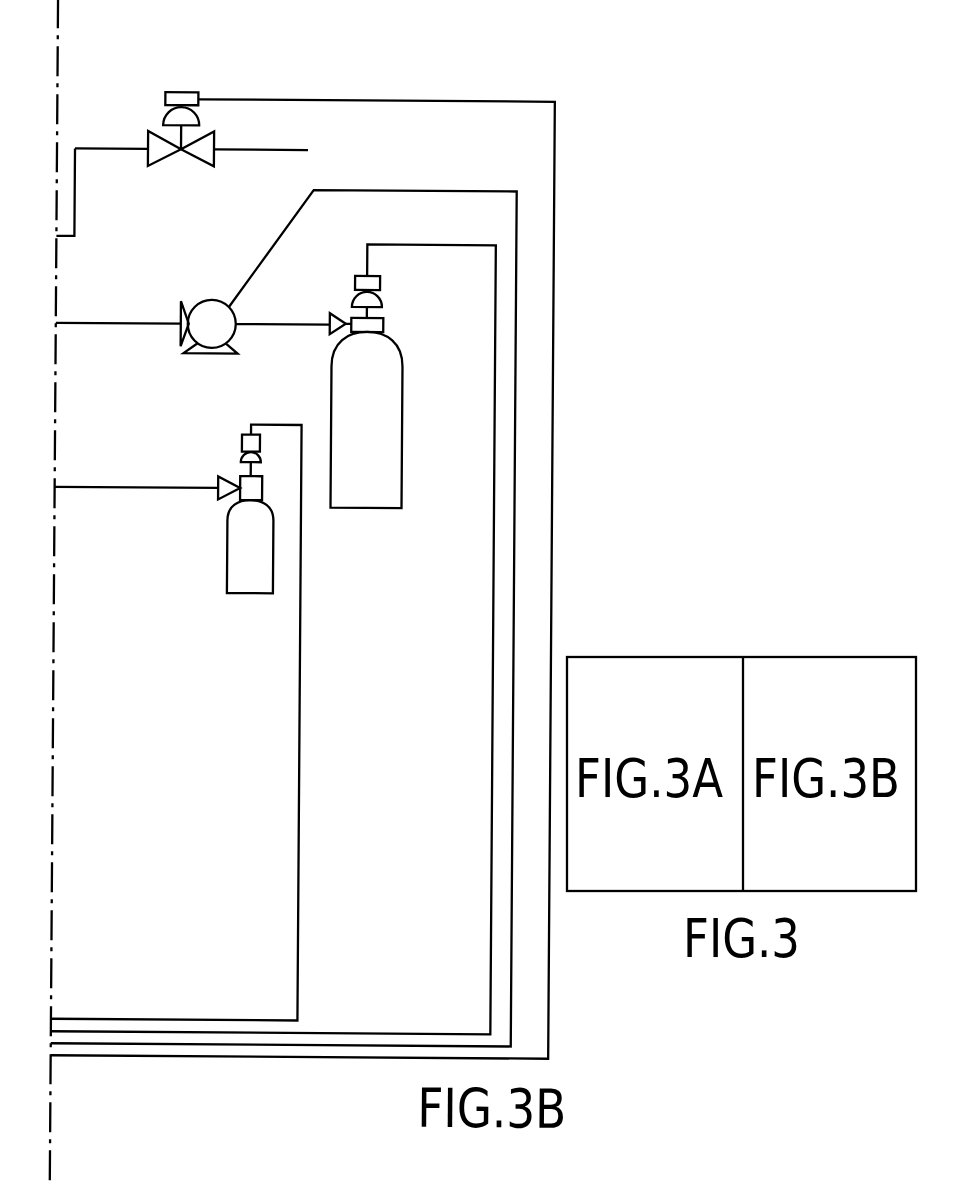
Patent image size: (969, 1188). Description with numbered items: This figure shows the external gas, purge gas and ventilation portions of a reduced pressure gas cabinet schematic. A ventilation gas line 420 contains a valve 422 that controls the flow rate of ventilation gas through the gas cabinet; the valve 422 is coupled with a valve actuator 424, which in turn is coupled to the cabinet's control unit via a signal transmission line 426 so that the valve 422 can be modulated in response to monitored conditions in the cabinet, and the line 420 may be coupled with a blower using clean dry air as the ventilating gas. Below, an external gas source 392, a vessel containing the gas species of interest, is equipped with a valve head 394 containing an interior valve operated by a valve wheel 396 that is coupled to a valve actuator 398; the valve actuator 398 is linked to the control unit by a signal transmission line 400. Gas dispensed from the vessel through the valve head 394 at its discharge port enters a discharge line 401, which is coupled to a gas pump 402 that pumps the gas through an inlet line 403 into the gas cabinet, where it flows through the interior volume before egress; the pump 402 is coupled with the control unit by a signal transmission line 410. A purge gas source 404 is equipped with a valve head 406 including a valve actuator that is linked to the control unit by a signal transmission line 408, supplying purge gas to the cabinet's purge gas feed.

The external gas source 392 is at (404, 411).
The valve head 394 is at (384, 327).
The valve wheel 396 is at (384, 300).
The valve actuator 398 is at (383, 280).
The signal transmission line 400 is at (400, 228).
The discharge line 401 is at (278, 324).
The gas pump 402 is at (208, 336).
The inlet line 403 is at (98, 325).
The purge gas source 404 is at (226, 556).
The valve head 406 is at (210, 444).
The signal transmission line 408 is at (302, 604).
The signal transmission line 410 is at (455, 190).
The ventilation gas line 420 is at (236, 150).
The valve 422 is at (200, 119).
The valve actuator 424 is at (163, 97).
The signal transmission line 426 is at (553, 450).